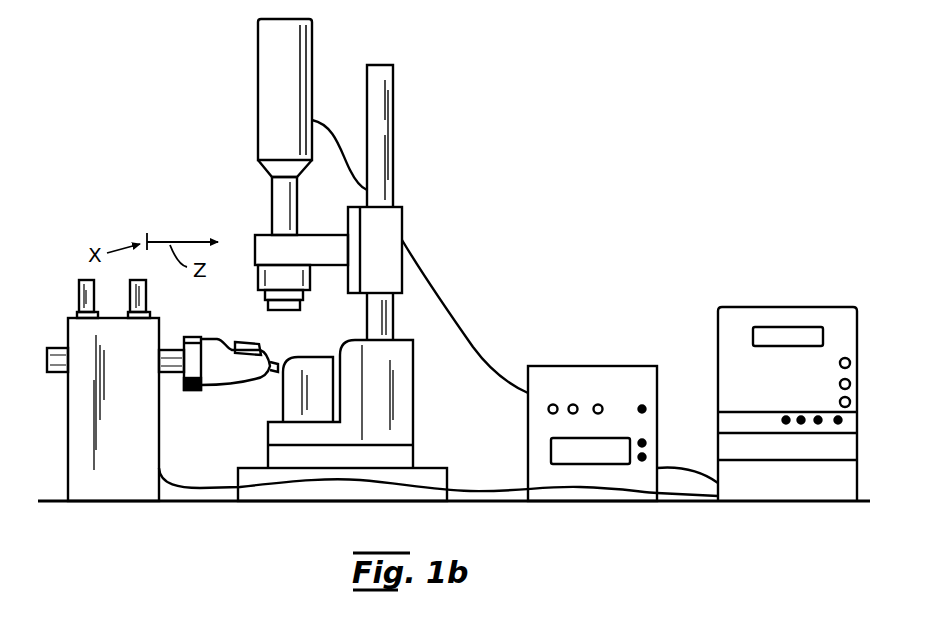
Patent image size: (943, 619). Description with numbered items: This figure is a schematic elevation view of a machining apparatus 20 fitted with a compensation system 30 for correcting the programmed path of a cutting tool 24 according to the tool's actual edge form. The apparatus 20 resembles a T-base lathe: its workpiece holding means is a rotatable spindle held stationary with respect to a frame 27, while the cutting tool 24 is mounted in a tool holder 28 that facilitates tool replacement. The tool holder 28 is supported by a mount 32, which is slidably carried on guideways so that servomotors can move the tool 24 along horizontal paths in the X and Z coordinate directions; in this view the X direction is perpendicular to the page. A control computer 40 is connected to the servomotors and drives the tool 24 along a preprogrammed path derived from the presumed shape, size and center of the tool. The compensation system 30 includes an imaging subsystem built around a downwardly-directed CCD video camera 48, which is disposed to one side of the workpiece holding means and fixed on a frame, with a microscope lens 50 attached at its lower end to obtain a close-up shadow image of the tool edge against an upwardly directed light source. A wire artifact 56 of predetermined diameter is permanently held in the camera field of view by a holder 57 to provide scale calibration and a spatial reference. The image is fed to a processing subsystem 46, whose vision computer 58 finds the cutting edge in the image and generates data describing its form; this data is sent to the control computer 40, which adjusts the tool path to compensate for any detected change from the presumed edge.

The machining apparatus 20 is at (230, 127).
The cutting tool 24 is at (270, 378).
The frame 27 is at (392, 145).
The tool holder 28 is at (212, 387).
The compensation system 30 is at (212, 210).
The mount 32 is at (194, 337).
The control computer 40 is at (785, 305).
The processing subsystem 46 is at (592, 397).
The CCD video camera 48 is at (278, 203).
The microscope lens 50 is at (268, 301).
The wire artifact 56 is at (283, 367).
The holder 57 is at (318, 355).
The vision computer 58 is at (607, 365).